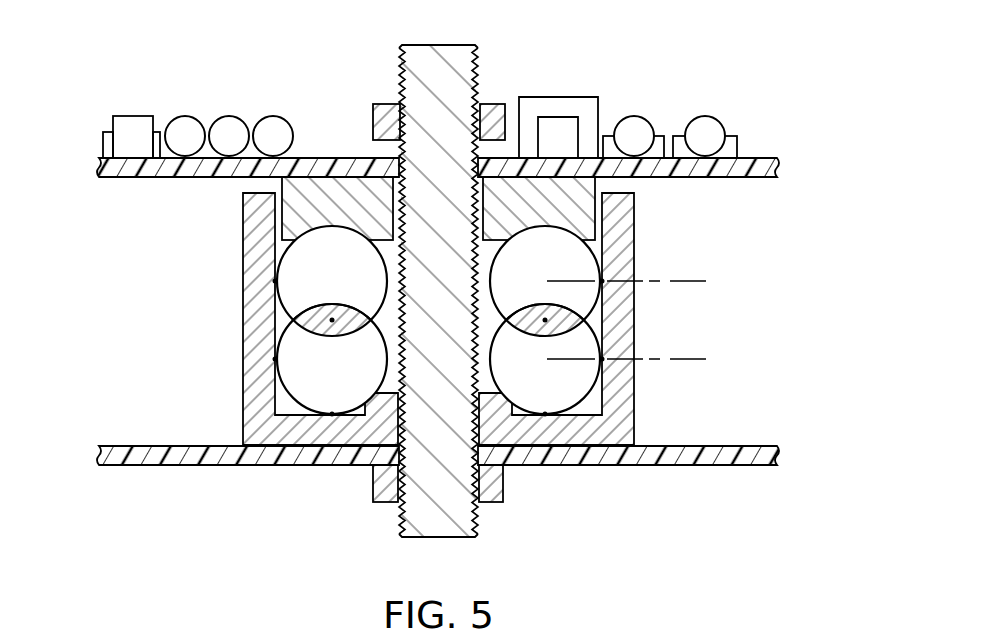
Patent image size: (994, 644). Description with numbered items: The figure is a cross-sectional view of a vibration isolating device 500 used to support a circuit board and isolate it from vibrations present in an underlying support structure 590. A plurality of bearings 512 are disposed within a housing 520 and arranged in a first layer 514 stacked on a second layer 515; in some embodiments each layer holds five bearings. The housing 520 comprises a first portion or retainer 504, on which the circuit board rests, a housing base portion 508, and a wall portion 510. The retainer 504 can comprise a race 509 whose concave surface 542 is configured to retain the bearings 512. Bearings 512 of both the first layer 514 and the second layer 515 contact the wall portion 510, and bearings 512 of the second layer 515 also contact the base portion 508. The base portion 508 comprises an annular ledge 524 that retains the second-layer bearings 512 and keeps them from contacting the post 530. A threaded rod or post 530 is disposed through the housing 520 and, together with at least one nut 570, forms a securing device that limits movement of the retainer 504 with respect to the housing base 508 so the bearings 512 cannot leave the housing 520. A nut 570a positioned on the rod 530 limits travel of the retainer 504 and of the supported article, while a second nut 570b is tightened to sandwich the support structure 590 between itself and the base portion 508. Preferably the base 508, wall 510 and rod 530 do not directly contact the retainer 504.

The vibration isolating device 500 is at (710, 73).
The first portion/retainer 504 is at (558, 183).
The housing base portion 508 is at (268, 437).
The race 509 is at (350, 230).
The wall portion 510 is at (250, 373).
The bearings 512 is at (570, 396).
The first layer 514 is at (686, 285).
The second layer 515 is at (686, 362).
The housing 520 is at (228, 245).
The annular ledge 524 is at (510, 397).
The post 530 is at (400, 528).
The concave surface 542 is at (583, 232).
The nut 570 is at (493, 497).
The nut 570a is at (491, 103).
The second nut 570b is at (491, 483).
The support structure 590 is at (733, 463).